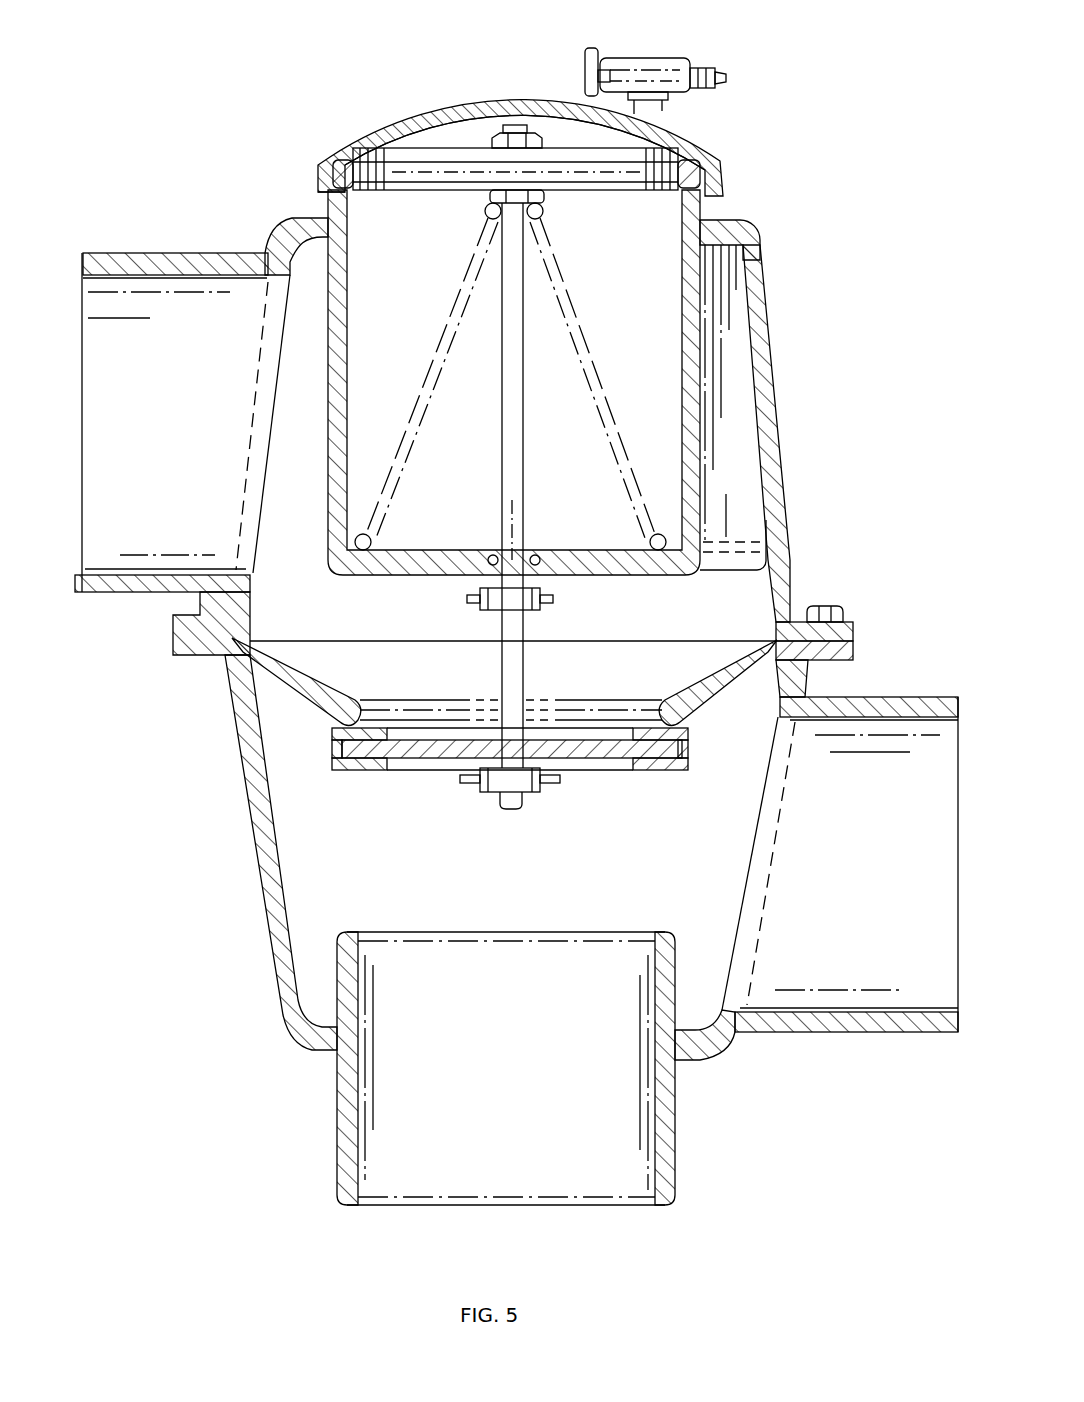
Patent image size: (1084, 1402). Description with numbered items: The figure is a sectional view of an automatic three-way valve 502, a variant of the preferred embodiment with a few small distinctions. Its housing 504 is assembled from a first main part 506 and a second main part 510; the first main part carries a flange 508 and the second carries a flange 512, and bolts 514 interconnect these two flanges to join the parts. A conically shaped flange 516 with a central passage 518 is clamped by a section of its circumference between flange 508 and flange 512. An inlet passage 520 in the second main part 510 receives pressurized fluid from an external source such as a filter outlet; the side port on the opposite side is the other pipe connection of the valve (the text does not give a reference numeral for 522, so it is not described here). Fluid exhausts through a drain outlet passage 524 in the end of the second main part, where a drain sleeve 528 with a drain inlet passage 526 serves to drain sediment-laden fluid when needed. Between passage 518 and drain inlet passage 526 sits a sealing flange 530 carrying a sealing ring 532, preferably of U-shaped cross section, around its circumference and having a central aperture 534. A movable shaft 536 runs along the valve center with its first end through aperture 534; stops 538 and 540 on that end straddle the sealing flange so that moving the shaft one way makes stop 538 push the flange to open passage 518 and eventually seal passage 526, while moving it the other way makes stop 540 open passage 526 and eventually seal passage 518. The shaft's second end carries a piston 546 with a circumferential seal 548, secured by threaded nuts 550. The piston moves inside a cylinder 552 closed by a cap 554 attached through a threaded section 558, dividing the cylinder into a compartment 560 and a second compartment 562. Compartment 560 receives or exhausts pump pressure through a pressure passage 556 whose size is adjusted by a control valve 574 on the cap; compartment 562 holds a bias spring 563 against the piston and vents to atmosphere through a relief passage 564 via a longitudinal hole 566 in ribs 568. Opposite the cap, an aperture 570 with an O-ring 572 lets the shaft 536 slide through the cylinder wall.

The automatic three-way valve 502 is at (292, 121).
The housing 504 is at (802, 305).
The first main part 506 is at (772, 358).
The flange 508 is at (855, 632).
The second main part 510 is at (247, 815).
The flange 512 is at (853, 655).
The bolts 514 is at (832, 602).
The conically shaped flange 516 is at (310, 693).
The passage 518 is at (593, 717).
The inlet passage 520 is at (846, 864).
The inlet pipe 522 is at (171, 422).
The drain outlet passage 524 is at (453, 1150).
The drain inlet passage 526 is at (443, 935).
The drain sleeve 528 is at (668, 1141).
The sealing flange 530 is at (613, 757).
The sealing ring 532 is at (355, 770).
The aperture 534 is at (560, 757).
The movable shaft 536 is at (510, 683).
The stop 538 is at (471, 606).
The stop 540 is at (485, 793).
The piston 546 is at (440, 173).
The seal 548 is at (712, 176).
The threaded nuts 550 is at (497, 137).
The cylinder 552 is at (683, 312).
The cap 554 is at (440, 107).
The pressure passage 556 is at (730, 78).
The threaded section 558 is at (320, 168).
The compartment 560 is at (442, 137).
The second compartment 562 is at (390, 283).
The bias spring 563 is at (541, 214).
The relief passage 564 is at (790, 544).
The longitudinal hole 566 is at (728, 494).
The ribs 568 is at (730, 438).
The aperture 570 is at (492, 550).
The O-ring 572 is at (537, 553).
The control valve 574 is at (650, 57).